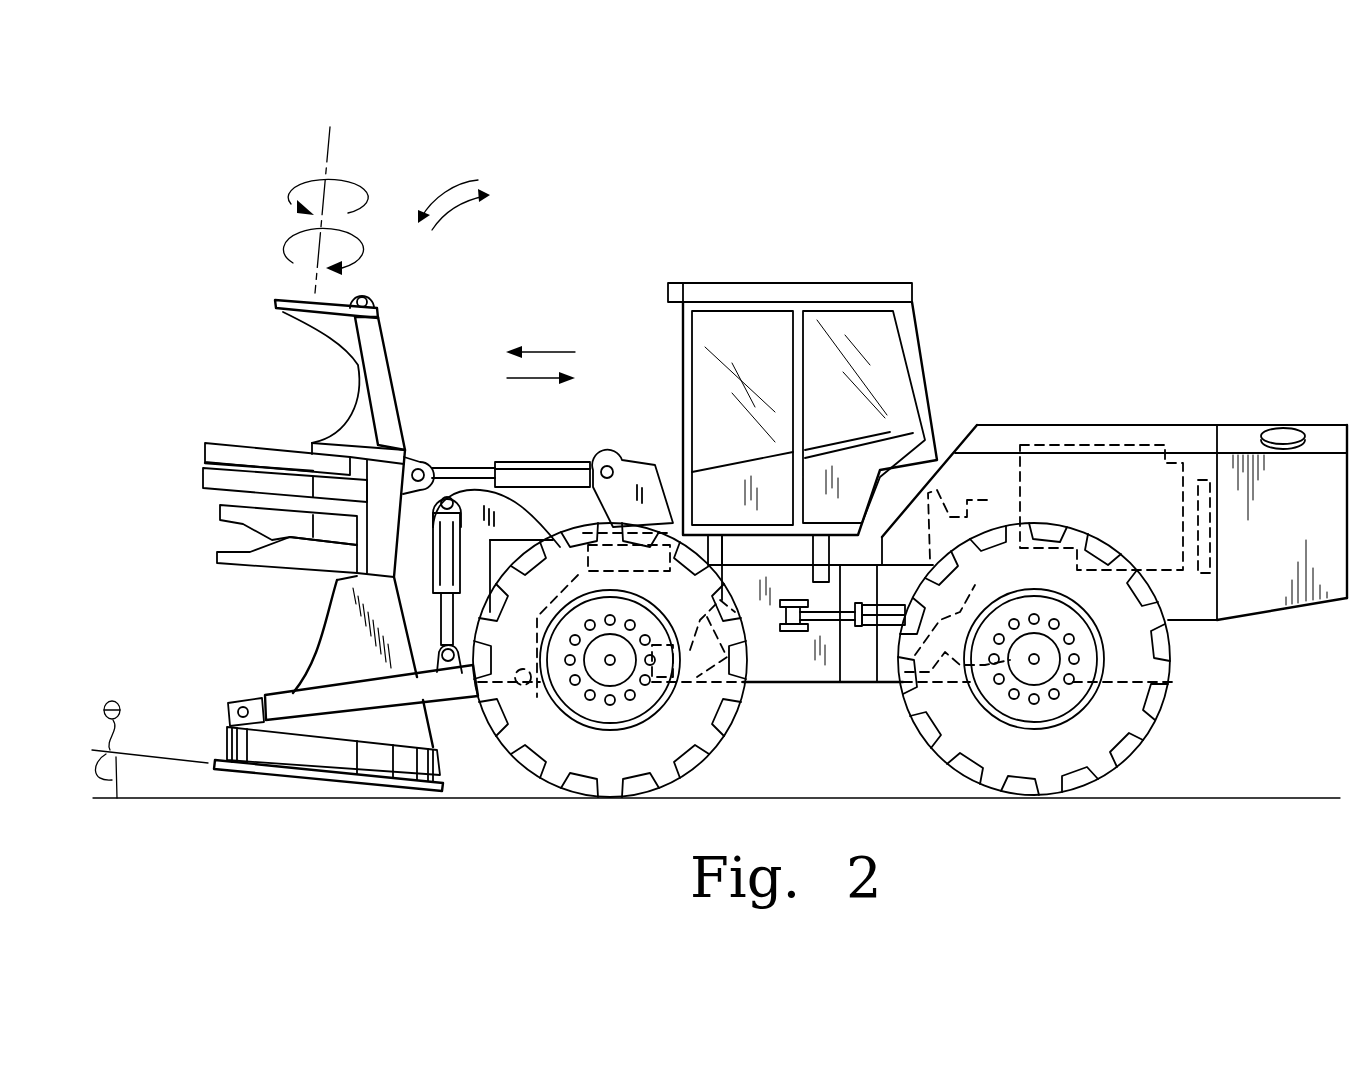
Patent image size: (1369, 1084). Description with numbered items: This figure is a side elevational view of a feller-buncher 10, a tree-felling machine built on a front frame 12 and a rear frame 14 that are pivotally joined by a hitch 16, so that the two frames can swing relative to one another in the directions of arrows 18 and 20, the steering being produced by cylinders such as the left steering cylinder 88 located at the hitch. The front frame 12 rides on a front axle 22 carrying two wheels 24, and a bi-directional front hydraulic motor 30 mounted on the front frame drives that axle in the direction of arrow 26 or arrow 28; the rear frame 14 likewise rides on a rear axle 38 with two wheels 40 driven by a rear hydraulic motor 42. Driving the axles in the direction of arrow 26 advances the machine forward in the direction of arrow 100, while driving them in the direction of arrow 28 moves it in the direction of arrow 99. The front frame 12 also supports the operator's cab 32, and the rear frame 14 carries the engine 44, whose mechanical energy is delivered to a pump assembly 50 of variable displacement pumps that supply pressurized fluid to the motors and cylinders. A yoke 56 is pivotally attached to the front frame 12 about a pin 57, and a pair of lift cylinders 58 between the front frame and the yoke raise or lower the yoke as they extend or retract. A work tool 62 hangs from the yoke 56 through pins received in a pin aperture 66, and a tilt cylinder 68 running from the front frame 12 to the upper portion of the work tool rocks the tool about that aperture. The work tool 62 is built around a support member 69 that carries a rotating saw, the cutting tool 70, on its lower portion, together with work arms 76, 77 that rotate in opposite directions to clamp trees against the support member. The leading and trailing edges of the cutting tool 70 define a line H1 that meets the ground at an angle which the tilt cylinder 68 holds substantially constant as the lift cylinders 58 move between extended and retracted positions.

The feller-buncher 10 is at (195, 215).
The front frame 12 is at (775, 683).
The rear frame 14 is at (1183, 410).
The hitch 16 is at (860, 690).
The arrow 18 is at (298, 180).
The arrow 20 is at (285, 250).
The front axle 22 is at (610, 665).
The wheels 24 is at (722, 745).
The arrow 26 is at (447, 200).
The arrow 28 is at (452, 218).
The front hydraulic motor 30 is at (683, 672).
The cab 32 is at (800, 283).
The rear axle 38 is at (1035, 663).
The wheels 40 is at (1168, 690).
The rear hydraulic motor 42 is at (968, 682).
The engine 44 is at (1083, 445).
The pump assembly 50 is at (987, 500).
The yoke 56 is at (448, 688).
The pin 57 is at (525, 688).
The lift cylinders 58 is at (446, 553).
The work tool 62 is at (207, 401).
The pin aperture 66 is at (243, 705).
The tilt cylinder 68 is at (573, 462).
The support member 69 is at (385, 387).
The cutting tool 70 is at (225, 780).
The work arm 76 is at (246, 452).
The work arm 77 is at (207, 452).
The left steering cylinder 88 is at (887, 632).
The arrow 99 is at (530, 380).
The arrow 100 is at (545, 352).
The line H1 is at (168, 758).